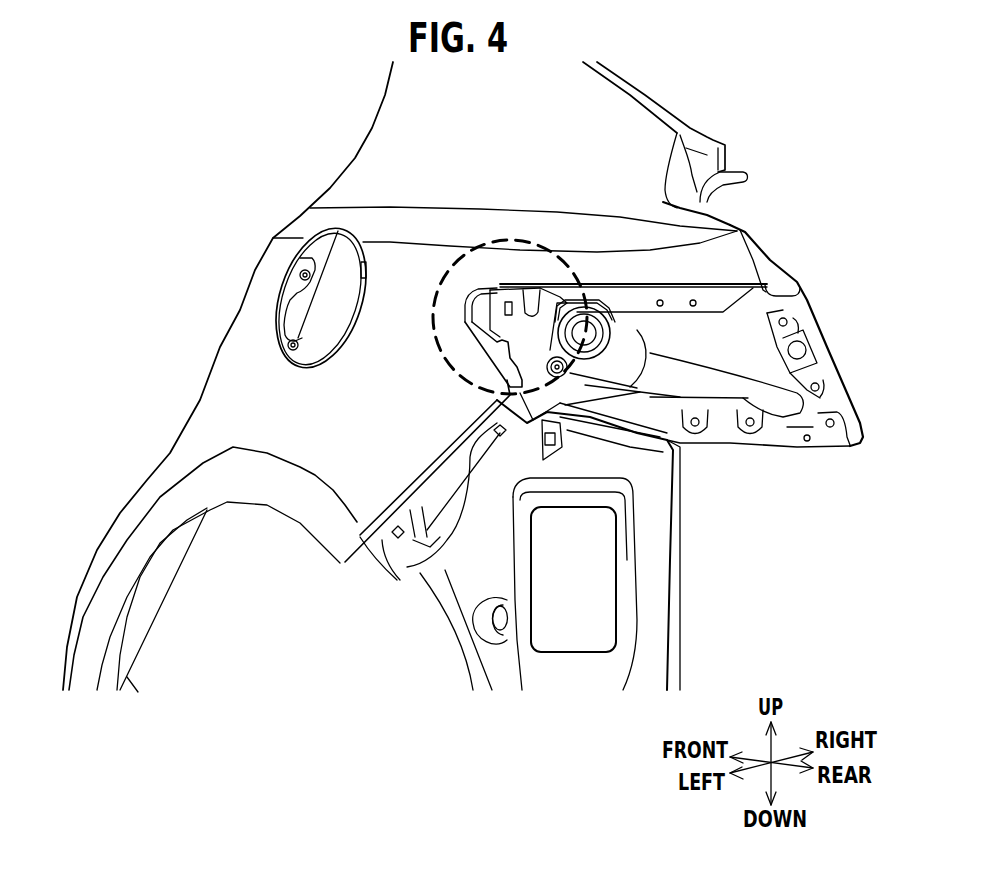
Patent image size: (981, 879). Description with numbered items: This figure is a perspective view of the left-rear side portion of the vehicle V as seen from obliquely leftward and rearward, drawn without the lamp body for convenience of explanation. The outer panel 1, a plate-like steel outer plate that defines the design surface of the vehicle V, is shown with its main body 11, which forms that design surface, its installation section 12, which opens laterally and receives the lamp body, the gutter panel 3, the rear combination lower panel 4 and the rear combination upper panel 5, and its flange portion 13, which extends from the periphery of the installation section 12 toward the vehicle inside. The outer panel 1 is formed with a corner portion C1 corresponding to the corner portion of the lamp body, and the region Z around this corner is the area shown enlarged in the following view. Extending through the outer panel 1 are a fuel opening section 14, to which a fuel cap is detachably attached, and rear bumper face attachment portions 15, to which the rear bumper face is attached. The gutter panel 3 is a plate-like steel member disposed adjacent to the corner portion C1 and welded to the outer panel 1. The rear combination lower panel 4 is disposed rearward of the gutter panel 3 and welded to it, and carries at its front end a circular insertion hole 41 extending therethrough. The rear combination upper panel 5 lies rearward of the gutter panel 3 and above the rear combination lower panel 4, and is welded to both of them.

The outer panel 1 is at (411, 276).
The vehicle V is at (212, 172).
The fuel opening section 14 is at (353, 325).
The corner portion C1 is at (498, 292).
The region Z is at (592, 268).
The flange portion 13 is at (485, 293).
The gutter panel 3 is at (527, 300).
The installation section 12 is at (560, 287).
The insertion hole 41 is at (568, 338).
The rear combination upper panel 5 is at (725, 300).
The rear combination lower panel 4 is at (713, 387).
The main body 11 is at (475, 345).
The rear bumper face attachment portion 15 is at (400, 573).